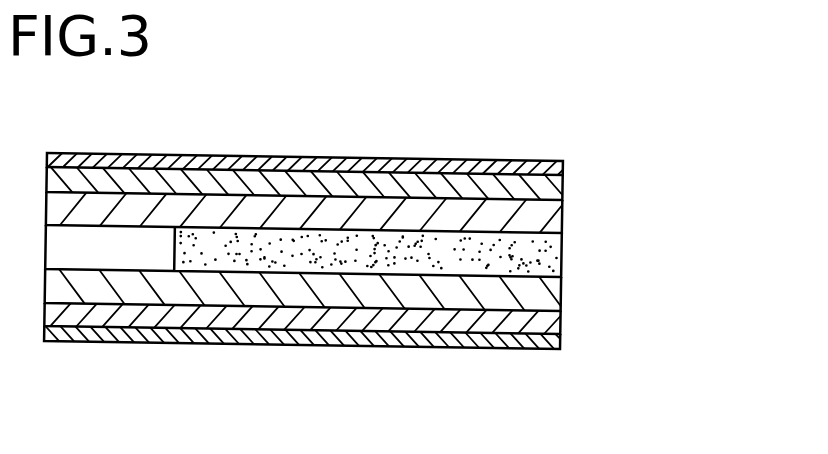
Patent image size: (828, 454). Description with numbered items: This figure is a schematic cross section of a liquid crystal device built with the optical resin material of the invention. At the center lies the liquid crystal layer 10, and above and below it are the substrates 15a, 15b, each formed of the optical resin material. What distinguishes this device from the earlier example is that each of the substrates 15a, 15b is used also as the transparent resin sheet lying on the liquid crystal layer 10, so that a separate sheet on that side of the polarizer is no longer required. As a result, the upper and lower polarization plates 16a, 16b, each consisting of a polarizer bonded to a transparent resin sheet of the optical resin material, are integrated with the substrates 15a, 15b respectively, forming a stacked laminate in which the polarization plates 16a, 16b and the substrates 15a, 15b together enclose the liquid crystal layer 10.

The liquid crystal layer 10 is at (565, 253).
The substrate 15a is at (565, 221).
The substrate 15b is at (565, 293).
The polarization plate 16a is at (698, 100).
The polarization plate 16b is at (696, 297).